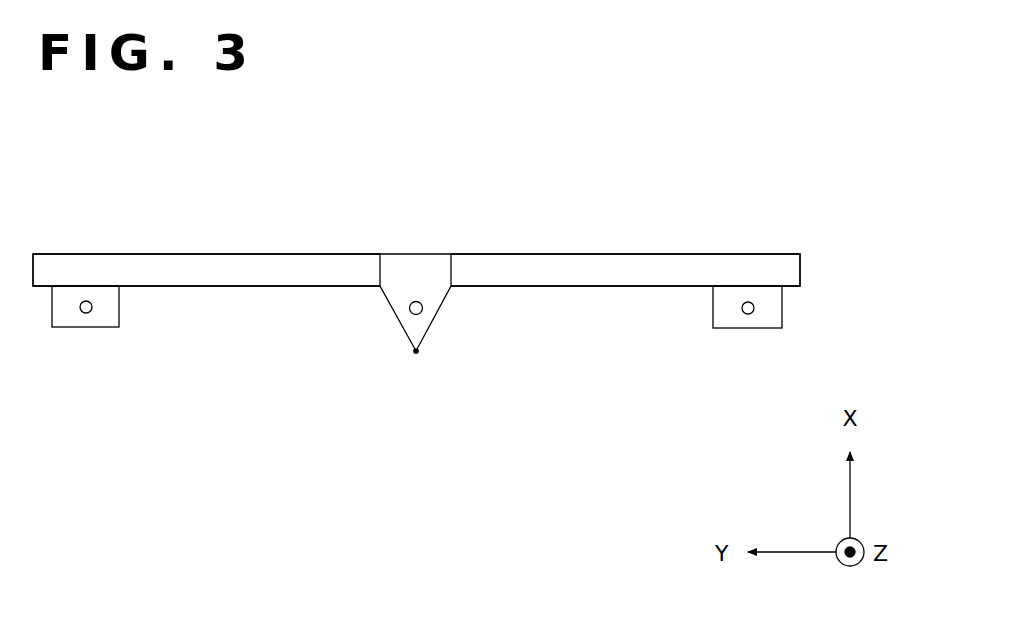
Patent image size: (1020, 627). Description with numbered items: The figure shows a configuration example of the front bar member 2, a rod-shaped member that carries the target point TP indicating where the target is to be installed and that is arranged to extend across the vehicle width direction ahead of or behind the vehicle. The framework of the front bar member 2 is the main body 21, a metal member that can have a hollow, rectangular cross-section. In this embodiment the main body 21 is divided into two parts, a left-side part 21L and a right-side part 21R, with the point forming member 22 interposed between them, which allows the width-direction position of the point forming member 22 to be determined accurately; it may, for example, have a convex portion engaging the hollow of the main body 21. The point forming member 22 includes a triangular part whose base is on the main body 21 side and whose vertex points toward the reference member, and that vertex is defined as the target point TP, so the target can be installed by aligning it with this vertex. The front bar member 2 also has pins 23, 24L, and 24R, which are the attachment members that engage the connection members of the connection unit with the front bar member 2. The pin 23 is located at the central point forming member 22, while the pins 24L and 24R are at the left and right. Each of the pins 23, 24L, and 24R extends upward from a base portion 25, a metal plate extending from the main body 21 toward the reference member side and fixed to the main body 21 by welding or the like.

The front bar member 2 is at (133, 182).
The main body 21 is at (566, 211).
The left-side part 21L is at (352, 253).
The right-side part 21R is at (463, 253).
The point forming member 22 is at (407, 252).
The pin 23 is at (421, 313).
The target point TP is at (416, 356).
The pin 24L is at (92, 313).
The pin 24R is at (743, 315).
The base portion 25 is at (80, 328).